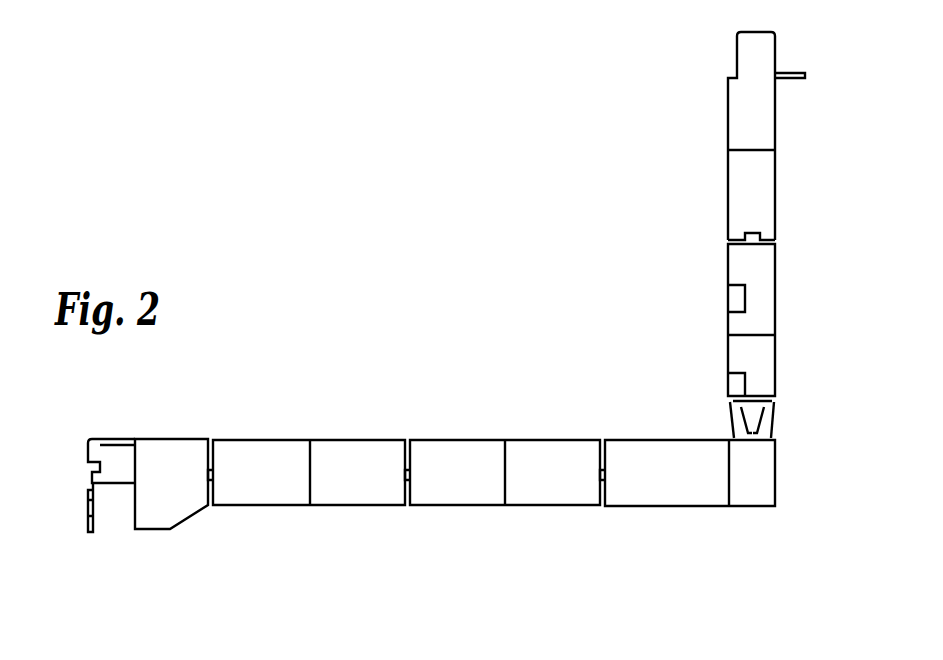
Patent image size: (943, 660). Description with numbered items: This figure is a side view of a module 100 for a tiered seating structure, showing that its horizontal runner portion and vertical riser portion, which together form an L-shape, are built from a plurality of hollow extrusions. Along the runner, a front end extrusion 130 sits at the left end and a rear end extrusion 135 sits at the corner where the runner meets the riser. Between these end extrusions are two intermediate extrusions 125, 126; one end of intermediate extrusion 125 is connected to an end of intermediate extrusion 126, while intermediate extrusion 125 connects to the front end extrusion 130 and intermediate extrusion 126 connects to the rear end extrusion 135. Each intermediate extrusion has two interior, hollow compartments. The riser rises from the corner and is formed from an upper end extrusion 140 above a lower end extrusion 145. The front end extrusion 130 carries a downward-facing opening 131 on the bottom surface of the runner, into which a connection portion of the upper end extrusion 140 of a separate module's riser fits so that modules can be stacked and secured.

The module 100 is at (672, 222).
The intermediate extrusion 125 is at (298, 506).
The intermediate extrusion 126 is at (522, 506).
The front end extrusion 130 is at (187, 437).
The opening 131 is at (102, 532).
The rear end extrusion 135 is at (720, 508).
The upper end extrusion 140 is at (777, 155).
The lower end extrusion 145 is at (777, 283).